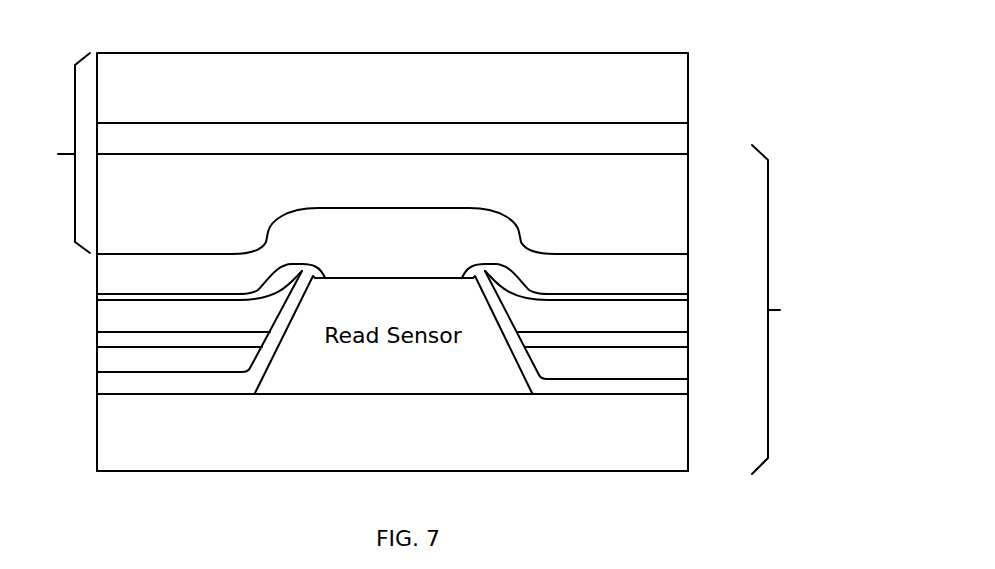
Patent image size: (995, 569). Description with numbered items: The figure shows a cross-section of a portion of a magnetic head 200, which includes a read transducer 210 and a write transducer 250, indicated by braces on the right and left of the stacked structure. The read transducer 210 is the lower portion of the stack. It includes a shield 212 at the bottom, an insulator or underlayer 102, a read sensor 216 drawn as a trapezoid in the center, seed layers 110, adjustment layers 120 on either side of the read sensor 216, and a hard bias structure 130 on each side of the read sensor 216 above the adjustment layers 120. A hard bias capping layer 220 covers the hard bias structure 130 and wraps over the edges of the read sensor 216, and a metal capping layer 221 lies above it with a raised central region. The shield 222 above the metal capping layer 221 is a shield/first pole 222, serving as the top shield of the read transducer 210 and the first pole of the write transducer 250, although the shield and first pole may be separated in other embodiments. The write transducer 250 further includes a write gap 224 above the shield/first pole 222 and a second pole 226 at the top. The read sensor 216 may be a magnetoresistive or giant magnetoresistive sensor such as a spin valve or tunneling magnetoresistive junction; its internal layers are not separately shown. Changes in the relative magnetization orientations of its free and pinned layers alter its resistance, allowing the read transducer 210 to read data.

The magnetic head 200 is at (47, 48).
The write transducer 250 is at (60, 153).
The read transducer 210 is at (781, 309).
The second pole 226 is at (689, 98).
The write gap 224 is at (276, 123).
The shield/first pole 222 is at (689, 183).
The metal capping layer 221 is at (563, 250).
The hard bias capping layer 220 is at (143, 293).
The hard bias structure 130 is at (97, 327).
The adjustment layer 120 is at (97, 343).
The seed layer 110 is at (145, 395).
The insulator or underlayer 102 is at (242, 395).
The read sensor 216 is at (357, 395).
The shield 212 is at (692, 455).